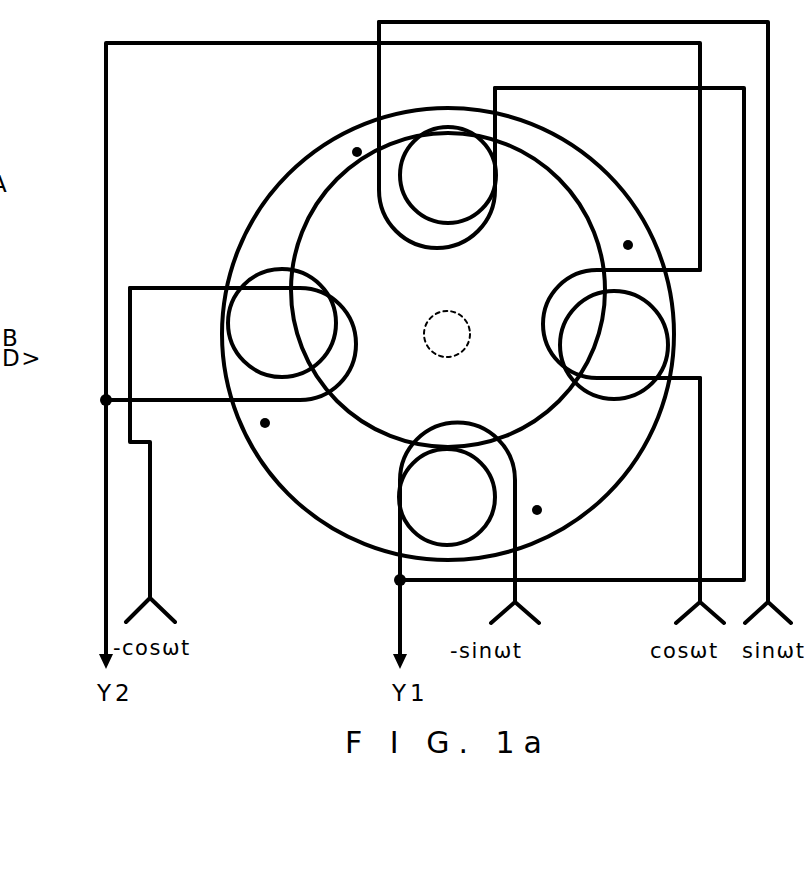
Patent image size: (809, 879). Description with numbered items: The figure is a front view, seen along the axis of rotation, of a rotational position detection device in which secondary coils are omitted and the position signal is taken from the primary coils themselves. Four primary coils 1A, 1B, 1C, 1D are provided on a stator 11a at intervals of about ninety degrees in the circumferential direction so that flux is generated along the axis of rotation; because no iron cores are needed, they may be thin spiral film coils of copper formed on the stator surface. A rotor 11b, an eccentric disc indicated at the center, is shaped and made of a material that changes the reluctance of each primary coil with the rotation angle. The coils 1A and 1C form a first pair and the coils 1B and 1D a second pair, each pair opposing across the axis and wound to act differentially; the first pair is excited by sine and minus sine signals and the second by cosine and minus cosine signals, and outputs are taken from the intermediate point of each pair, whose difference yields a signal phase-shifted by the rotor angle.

The stator 11a is at (266, 192).
The rotor 11b is at (541, 159).
The primary coil 1A is at (448, 178).
The primary coil 1B is at (605, 334).
The primary coil 1C is at (445, 490).
The primary coil 1D is at (290, 340).